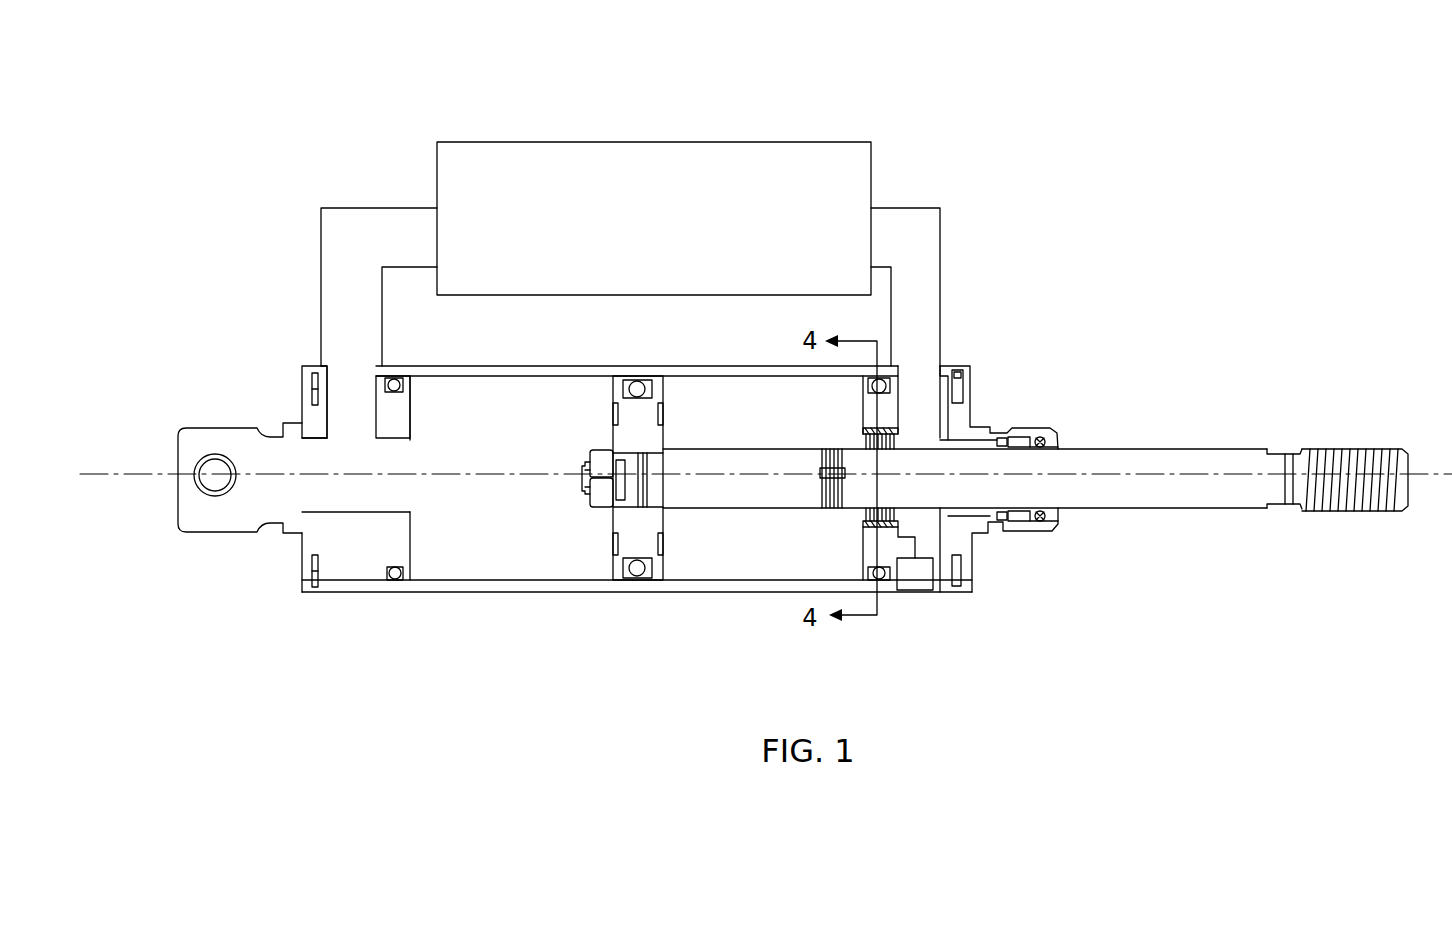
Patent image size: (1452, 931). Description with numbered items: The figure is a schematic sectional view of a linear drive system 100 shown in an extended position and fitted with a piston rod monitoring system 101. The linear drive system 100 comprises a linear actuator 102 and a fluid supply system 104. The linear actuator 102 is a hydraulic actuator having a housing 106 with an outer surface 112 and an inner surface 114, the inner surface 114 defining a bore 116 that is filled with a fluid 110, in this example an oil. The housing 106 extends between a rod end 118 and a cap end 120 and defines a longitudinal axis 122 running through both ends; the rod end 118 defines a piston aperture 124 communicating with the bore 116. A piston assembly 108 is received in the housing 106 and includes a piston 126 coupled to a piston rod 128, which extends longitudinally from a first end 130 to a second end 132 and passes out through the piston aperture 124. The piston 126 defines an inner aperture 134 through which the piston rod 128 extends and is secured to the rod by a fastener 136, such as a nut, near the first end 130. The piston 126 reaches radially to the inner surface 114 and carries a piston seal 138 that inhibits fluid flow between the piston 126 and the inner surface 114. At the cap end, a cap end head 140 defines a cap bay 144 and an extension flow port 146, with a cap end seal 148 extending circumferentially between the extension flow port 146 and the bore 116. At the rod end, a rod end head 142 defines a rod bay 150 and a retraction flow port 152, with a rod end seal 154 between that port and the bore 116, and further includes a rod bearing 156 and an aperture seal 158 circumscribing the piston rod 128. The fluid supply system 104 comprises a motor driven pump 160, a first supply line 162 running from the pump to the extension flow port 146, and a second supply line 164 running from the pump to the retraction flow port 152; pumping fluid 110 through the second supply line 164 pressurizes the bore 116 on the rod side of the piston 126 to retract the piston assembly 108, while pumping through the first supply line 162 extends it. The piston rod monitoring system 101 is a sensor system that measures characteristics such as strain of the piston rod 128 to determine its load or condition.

The linear drive system 100 is at (1195, 111).
The piston rod monitoring system 101 is at (831, 519).
The linear actuator 102 is at (1059, 367).
The fluid supply system 104 is at (721, 186).
The housing 106 is at (372, 591).
The piston assembly 108 is at (579, 500).
The fluid 110 is at (457, 567).
The outer surface 112 is at (430, 594).
The inner surface 114 is at (556, 588).
The bore 116 is at (466, 433).
The rod end 118 is at (1060, 521).
The cap end 120 is at (186, 532).
The longitudinal axis 122 is at (138, 490).
The piston aperture 124 is at (1059, 436).
The piston 126 is at (626, 546).
The piston rod 128 is at (1057, 543).
The first end 130 is at (594, 534).
The second end 132 is at (1410, 490).
The inner aperture 134 is at (656, 481).
The fastener 136 is at (600, 457).
The piston seal 138 is at (640, 581).
The cap end head 140 is at (348, 562).
The rod end head 142 is at (945, 590).
The cap bay 144 is at (326, 472).
The extension flow port 146 is at (349, 406).
The cap end seal 148 is at (395, 380).
The rod bay 150 is at (1044, 505).
The retraction flow port 152 is at (917, 387).
The rod end seal 154 is at (882, 592).
The rod bearing 156 is at (990, 528).
The aperture seal 158 is at (1057, 430).
The motor driven pump 160 is at (707, 142).
The first supply line 162 is at (321, 232).
The second supply line 164 is at (940, 240).